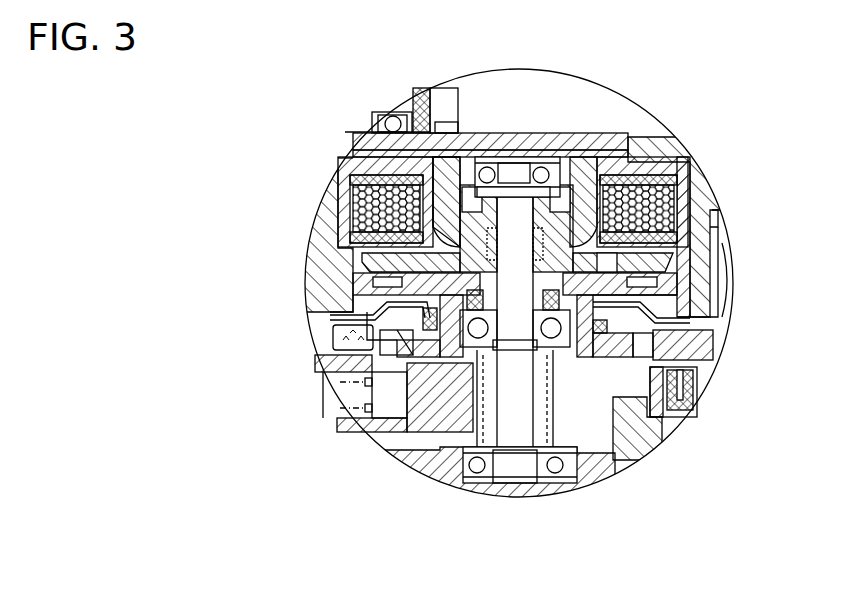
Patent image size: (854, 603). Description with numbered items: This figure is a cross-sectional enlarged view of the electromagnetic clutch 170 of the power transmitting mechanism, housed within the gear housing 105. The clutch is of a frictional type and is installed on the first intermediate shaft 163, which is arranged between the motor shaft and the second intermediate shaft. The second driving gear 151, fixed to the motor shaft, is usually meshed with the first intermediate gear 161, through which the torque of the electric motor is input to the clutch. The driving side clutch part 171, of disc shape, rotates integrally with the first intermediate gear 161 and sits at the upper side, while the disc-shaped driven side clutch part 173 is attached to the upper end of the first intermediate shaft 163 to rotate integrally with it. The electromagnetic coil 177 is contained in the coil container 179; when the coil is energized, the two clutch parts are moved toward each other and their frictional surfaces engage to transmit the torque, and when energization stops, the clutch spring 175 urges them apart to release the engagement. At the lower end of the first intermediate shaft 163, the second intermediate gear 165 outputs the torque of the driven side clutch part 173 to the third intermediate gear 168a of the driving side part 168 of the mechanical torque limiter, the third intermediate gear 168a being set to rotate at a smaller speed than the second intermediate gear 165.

The gear housing 105 is at (675, 145).
The second driving gear 151 is at (695, 348).
The first intermediate gear 161 is at (607, 353).
The first intermediate shaft 163 is at (515, 437).
The second intermediate gear 165 is at (547, 427).
The driving side part 168 is at (385, 436).
The third intermediate gear 168a is at (480, 423).
The electromagnetic clutch 170 is at (578, 160).
The driving side clutch part 171 is at (338, 278).
The driven side clutch part 173 is at (445, 235).
The clutch spring 175 is at (477, 193).
The electromagnetic coil 177 is at (668, 195).
The coil container 179 is at (638, 162).